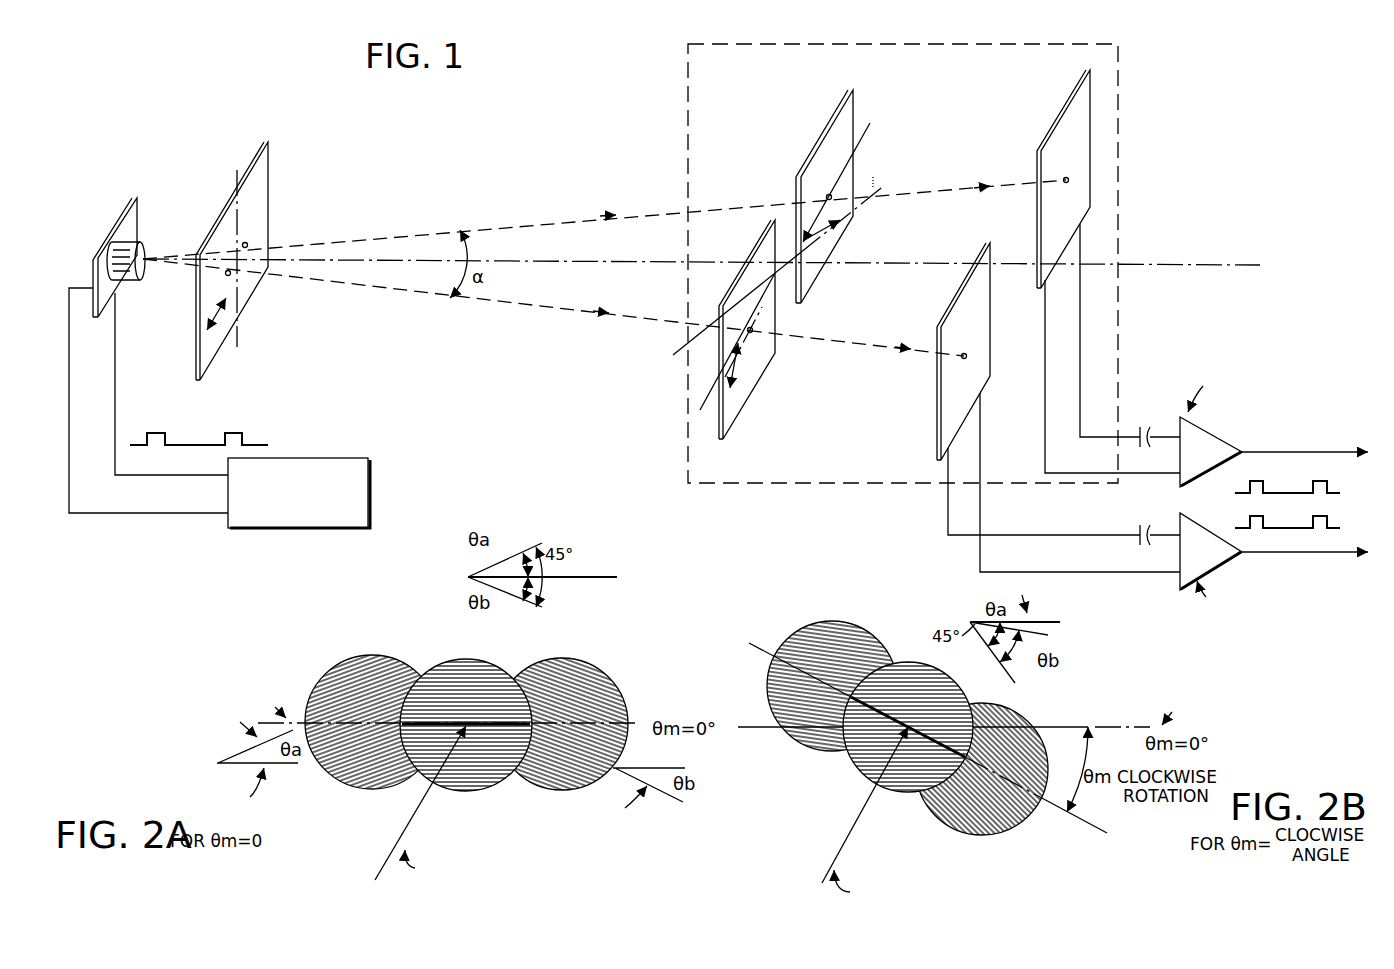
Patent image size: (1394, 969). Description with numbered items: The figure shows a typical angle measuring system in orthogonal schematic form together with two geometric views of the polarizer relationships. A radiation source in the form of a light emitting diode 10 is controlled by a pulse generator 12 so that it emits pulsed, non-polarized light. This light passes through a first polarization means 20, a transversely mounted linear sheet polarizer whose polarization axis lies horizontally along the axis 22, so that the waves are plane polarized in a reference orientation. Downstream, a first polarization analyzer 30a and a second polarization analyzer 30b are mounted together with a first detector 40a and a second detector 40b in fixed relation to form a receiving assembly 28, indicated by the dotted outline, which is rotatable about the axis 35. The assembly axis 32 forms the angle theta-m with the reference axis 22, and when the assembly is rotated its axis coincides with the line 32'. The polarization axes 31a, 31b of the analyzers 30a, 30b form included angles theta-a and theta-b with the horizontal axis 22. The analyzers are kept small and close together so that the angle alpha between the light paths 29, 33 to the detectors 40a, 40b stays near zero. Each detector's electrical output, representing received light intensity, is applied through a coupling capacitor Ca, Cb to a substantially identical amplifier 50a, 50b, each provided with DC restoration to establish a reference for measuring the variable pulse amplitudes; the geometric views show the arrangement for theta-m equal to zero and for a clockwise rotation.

In FIG. 1, the light emitting diode 10 is at (132, 217).
In FIG. 1, the pulse generator 12 is at (219, 408).
In FIG. 1, the first polarization means 20 is at (265, 193).
In FIG. 2A, the first polarization means 20 is at (448, 677).
In FIG. 2B, the first polarization means 20 is at (908, 727).
In FIG. 1, the axis 22 is at (268, 227).
In FIG. 2A, the axis 22 is at (630, 723).
In FIG. 2B, the axis 22 is at (1147, 728).
In FIG. 1, the receiving assembly 28 is at (1120, 207).
In FIG. 1, the light path 29 is at (398, 212).
In FIG. 1, the light path 33 is at (377, 288).
In FIG. 1, the first polarization analyzer 30a is at (723, 430).
In FIG. 2A, the first polarization analyzer 30a is at (368, 677).
In FIG. 2B, the first polarization analyzer 30a is at (797, 645).
In FIG. 1, the second polarization analyzer 30b is at (856, 105).
In FIG. 2A, the second polarization analyzer 30b is at (577, 678).
In FIG. 2B, the second polarization analyzer 30b is at (1010, 715).
In FIG. 1, the polarization axis 31a is at (748, 374).
In FIG. 2A, the polarization axis 31a is at (528, 545).
In FIG. 2B, the polarization axis 31a is at (1048, 637).
In FIG. 1, the polarization axis 31b is at (822, 232).
In FIG. 2A, the polarization axis 31b is at (542, 606).
In FIG. 2B, the polarization axis 31b is at (997, 666).
In FIG. 1, the assembly axis 32 is at (854, 172).
In FIG. 2A, the assembly axis 32 is at (537, 745).
In FIG. 1, the line 32' is at (798, 249).
In FIG. 2B, the line 32' is at (936, 740).
In FIG. 1, the axis 35 is at (1183, 265).
In FIG. 2A, the axis 35 is at (433, 812).
In FIG. 2B, the axis 35 is at (860, 824).
In FIG. 1, the first detector 40a is at (989, 256).
In FIG. 1, the second detector 40b is at (1039, 224).
In FIG. 1, the amplifier 50a is at (1178, 552).
In FIG. 1, the amplifier 50b is at (1213, 437).
In FIG. 1, the coupling capacitor Ca is at (1148, 527).
In FIG. 1, the coupling capacitor Cb is at (1152, 437).